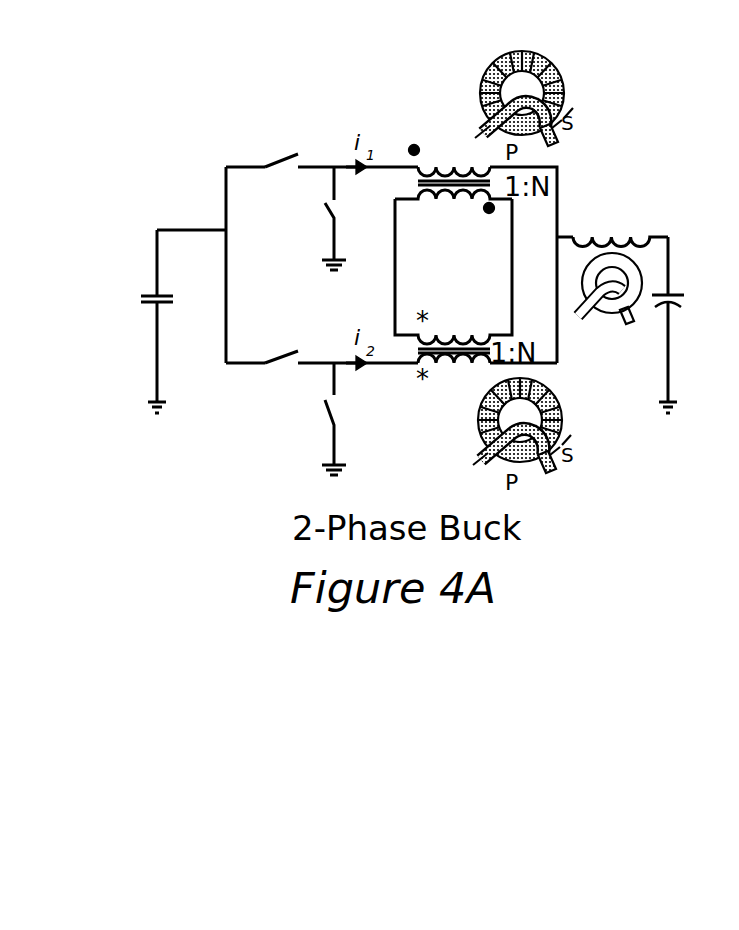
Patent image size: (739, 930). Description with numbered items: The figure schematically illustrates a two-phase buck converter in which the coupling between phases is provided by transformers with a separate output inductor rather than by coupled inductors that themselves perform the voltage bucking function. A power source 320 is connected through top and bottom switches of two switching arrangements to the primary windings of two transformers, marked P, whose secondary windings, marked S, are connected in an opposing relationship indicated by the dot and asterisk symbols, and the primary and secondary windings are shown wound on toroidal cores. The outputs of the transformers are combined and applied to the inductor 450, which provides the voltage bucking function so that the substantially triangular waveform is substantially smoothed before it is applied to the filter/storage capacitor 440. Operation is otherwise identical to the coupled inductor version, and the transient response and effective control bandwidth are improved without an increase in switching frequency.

The power source 320 is at (150, 295).
The inductor 450 is at (630, 228).
The filter/storage capacitor 440 is at (673, 295).